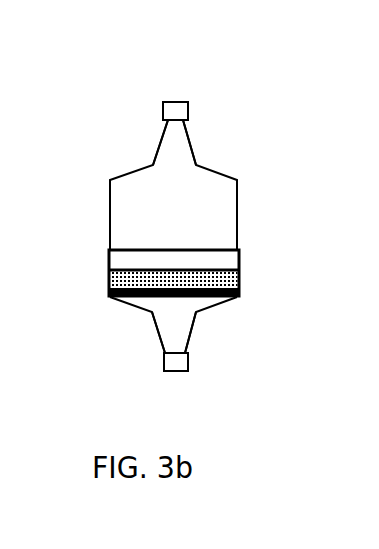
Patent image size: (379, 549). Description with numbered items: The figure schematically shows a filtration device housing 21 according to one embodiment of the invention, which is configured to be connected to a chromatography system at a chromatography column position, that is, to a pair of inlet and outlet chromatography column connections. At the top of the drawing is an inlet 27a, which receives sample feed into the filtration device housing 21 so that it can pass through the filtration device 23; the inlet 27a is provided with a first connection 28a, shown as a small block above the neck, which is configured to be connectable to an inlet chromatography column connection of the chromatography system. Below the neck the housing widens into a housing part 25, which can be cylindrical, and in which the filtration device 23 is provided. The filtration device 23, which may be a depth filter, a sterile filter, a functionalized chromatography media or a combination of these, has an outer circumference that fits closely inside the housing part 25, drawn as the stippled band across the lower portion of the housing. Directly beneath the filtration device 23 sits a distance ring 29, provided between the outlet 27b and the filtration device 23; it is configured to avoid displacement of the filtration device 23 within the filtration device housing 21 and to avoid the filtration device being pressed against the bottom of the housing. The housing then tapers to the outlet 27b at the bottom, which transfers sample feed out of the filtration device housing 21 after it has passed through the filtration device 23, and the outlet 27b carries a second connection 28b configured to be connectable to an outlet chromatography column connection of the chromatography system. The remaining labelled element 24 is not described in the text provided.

The filtration device housing 21 is at (92, 128).
The filtration device 23 is at (128, 277).
The filter housing 24 is at (215, 258).
The housing part 25 is at (205, 210).
The inlet 27a is at (163, 110).
The outlet 27b is at (165, 356).
The first connection 28a is at (180, 110).
The second connection 28b is at (182, 362).
The distance ring 29 is at (133, 295).